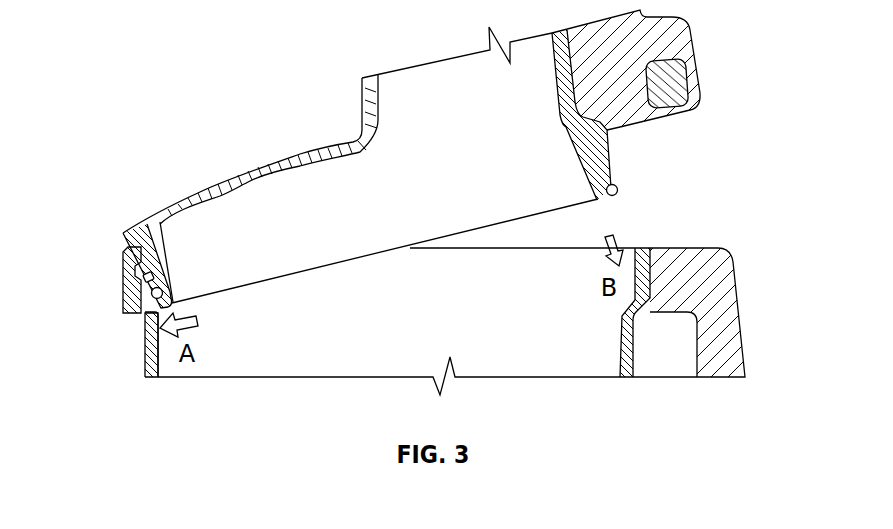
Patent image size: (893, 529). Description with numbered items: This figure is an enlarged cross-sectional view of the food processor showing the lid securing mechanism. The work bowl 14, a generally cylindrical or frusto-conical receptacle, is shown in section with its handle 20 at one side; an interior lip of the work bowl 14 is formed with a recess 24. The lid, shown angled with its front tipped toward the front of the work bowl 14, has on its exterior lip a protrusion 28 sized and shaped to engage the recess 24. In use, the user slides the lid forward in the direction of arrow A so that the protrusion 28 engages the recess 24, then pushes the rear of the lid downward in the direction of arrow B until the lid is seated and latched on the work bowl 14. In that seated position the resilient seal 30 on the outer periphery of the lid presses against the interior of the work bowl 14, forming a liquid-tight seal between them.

The work bowl 14 is at (148, 378).
The handle 20 is at (742, 318).
The recesses 24 is at (133, 277).
The protrusions 28 is at (151, 276).
The resilient seal 30 is at (152, 295).